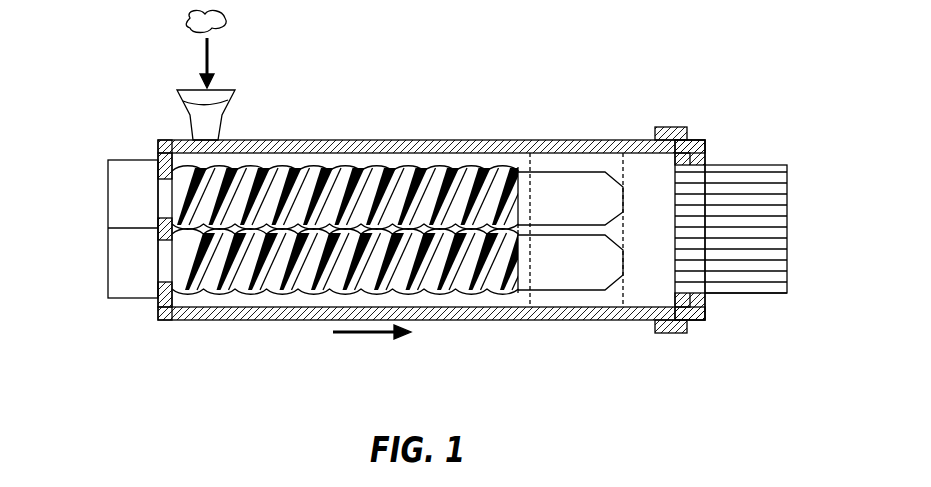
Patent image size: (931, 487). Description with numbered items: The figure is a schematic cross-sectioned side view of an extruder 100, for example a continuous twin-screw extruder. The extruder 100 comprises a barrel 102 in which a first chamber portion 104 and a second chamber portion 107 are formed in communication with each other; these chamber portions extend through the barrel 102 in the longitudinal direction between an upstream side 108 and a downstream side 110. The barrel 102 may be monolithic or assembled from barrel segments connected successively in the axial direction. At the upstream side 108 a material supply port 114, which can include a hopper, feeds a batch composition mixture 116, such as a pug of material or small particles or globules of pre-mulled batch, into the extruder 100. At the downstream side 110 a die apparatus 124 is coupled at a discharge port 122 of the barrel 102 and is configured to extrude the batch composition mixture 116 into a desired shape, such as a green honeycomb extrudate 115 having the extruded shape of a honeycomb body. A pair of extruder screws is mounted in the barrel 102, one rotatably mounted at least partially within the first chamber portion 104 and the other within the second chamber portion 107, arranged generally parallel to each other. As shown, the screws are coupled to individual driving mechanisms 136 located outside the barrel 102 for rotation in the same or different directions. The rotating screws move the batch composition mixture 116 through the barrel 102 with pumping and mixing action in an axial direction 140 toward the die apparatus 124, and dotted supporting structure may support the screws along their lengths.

The extruder 100 is at (440, 62).
The barrel 102 is at (240, 139).
The first chamber portion 104 is at (351, 167).
The second chamber portion 107 is at (355, 298).
The upstream side 108 is at (177, 331).
The downstream side 110 is at (650, 125).
The material supply port 114 is at (190, 112).
The green honeycomb extrudate 115 is at (736, 298).
The batch composition mixture 116 is at (228, 22).
The discharge port 122 is at (656, 182).
The die apparatus 124 is at (707, 196).
The driving mechanisms 136 is at (133, 160).
The axial direction 140 is at (385, 340).